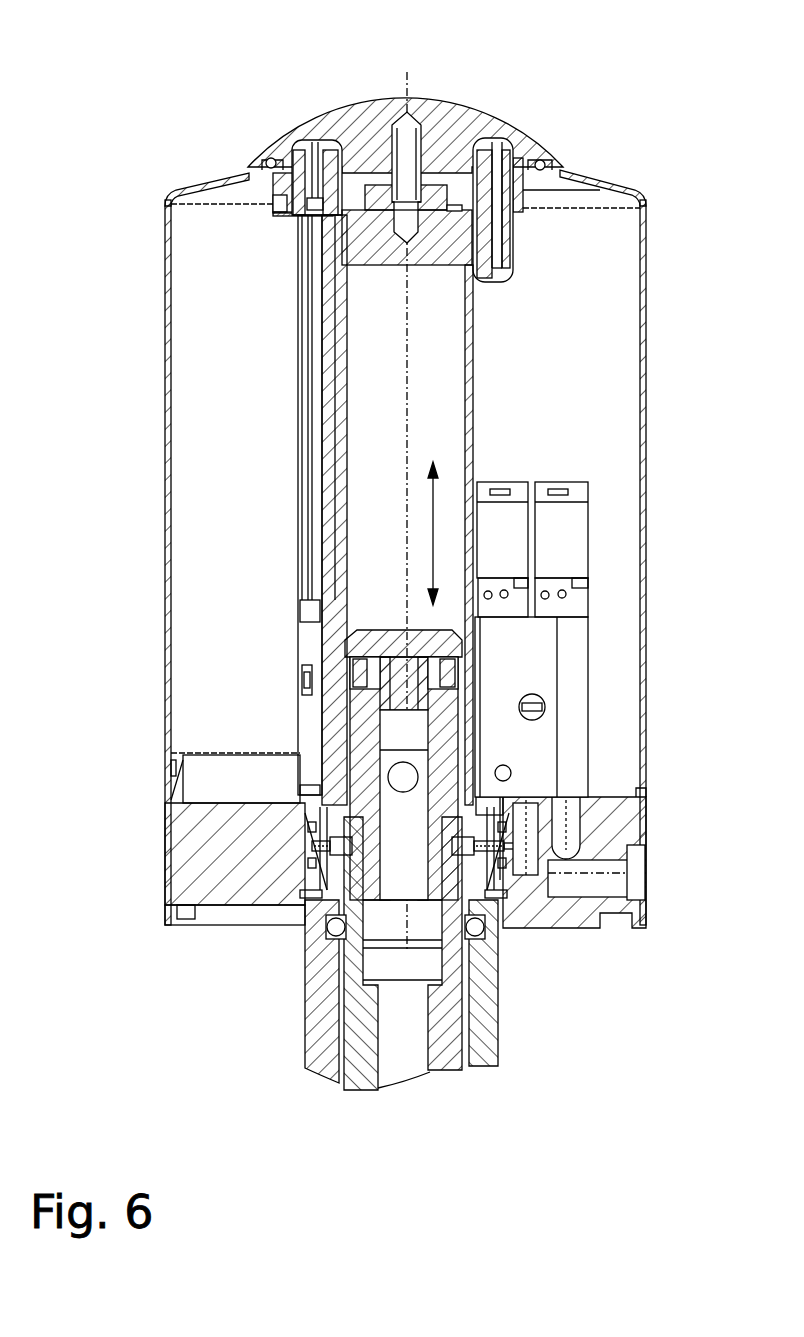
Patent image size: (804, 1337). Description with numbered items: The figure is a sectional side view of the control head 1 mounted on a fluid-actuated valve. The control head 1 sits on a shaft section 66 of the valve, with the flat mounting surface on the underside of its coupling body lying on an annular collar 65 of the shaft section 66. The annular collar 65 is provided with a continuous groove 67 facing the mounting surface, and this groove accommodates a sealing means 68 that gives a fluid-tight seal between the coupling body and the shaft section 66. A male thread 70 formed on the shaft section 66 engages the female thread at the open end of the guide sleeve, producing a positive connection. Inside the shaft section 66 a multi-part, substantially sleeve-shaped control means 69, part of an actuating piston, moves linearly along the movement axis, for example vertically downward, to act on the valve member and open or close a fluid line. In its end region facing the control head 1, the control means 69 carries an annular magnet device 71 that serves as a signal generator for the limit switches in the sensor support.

The control head 1 is at (150, 46).
The annular collar 65 is at (303, 897).
The shaft section 66 is at (311, 1010).
The continuous groove 67 is at (488, 922).
The sealing means 68 is at (322, 890).
The control means 69 is at (360, 1036).
The male thread 70 is at (480, 893).
The annular magnet device 71 is at (445, 673).